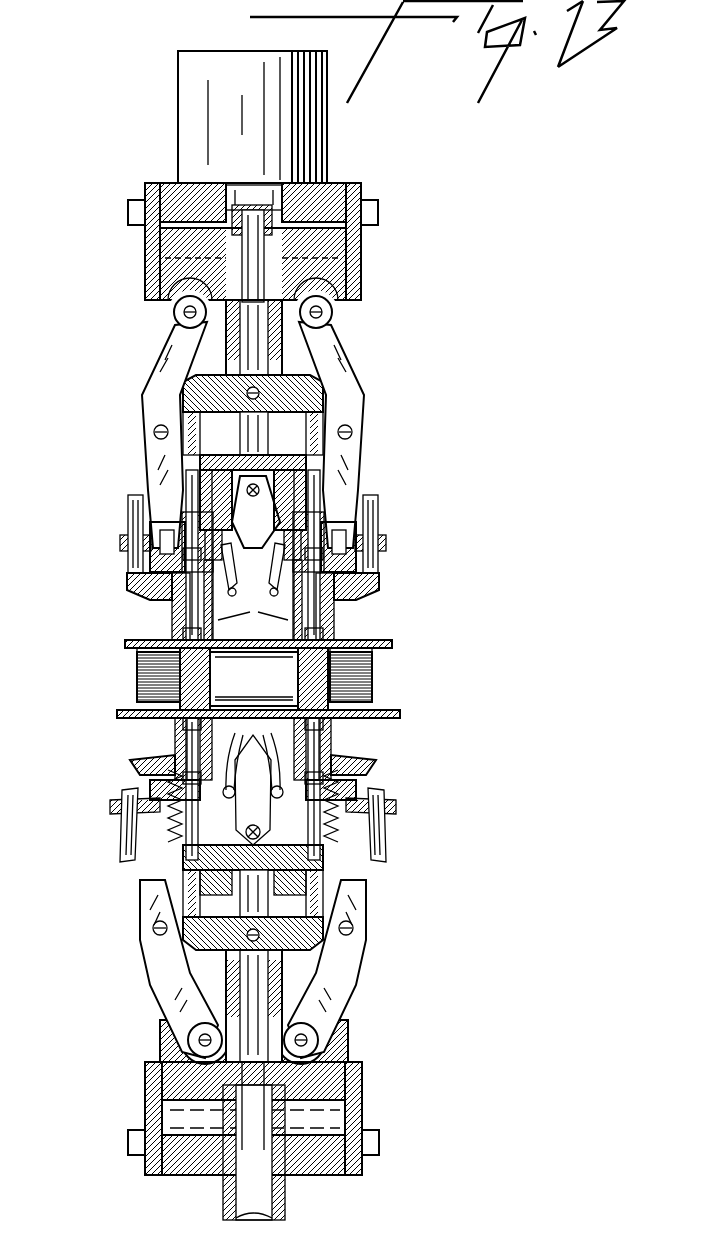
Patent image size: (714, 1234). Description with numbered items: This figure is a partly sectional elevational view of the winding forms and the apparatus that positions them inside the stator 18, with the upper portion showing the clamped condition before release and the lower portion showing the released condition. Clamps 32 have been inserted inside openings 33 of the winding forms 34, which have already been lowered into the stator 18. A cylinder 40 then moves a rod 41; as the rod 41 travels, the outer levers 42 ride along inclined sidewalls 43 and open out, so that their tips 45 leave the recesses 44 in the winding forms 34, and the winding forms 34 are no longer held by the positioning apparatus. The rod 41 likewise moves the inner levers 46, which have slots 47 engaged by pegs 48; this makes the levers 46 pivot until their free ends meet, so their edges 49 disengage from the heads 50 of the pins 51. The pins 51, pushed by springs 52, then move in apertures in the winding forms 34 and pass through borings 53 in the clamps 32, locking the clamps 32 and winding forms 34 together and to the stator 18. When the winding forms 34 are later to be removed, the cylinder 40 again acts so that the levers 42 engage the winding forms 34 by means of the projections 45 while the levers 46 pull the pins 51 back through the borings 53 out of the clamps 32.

The stator 18 is at (137, 680).
The clamps 32 is at (125, 640).
The openings 33 is at (195, 640).
The winding forms 34 is at (130, 598).
The cylinder 40 is at (197, 127).
The rod 41 is at (258, 312).
The levers 42 is at (162, 405).
The inclined sidewalls 43 is at (185, 293).
The recesses 44 is at (157, 823).
The tips 45 is at (160, 528).
The inner levers 46 is at (210, 500).
The slots 47 is at (250, 619).
The pegs 48 is at (256, 725).
The edges 49 is at (305, 598).
The heads 50 is at (392, 740).
The pins 51 is at (112, 732).
The springs 52 is at (368, 530).
The borings 53 is at (292, 652).